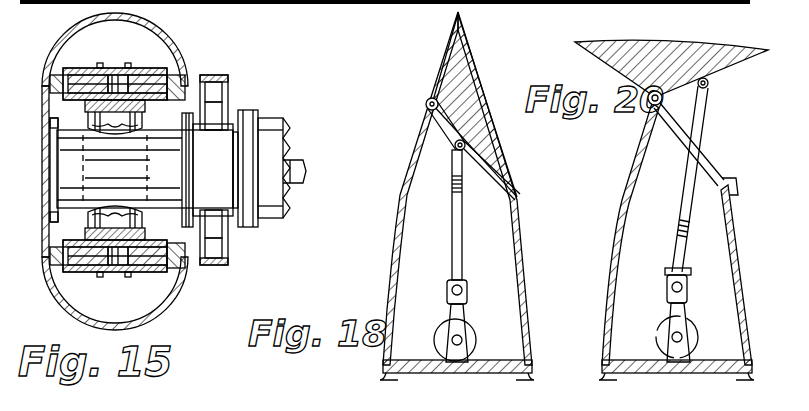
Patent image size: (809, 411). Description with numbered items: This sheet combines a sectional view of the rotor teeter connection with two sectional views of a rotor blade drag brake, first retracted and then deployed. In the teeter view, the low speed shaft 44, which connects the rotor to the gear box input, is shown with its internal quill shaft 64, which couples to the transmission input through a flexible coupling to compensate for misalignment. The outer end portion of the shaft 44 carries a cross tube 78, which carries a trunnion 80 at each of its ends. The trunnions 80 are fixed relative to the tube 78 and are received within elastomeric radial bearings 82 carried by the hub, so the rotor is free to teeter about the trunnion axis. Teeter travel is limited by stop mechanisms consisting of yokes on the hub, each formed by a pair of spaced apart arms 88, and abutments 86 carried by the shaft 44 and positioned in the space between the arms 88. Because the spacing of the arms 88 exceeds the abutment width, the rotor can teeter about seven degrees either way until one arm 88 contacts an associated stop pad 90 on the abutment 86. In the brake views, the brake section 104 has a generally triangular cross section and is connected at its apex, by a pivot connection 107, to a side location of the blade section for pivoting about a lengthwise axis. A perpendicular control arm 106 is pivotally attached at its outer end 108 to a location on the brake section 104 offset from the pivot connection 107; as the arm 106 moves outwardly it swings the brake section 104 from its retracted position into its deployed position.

In FIG. 15, the low speed shaft 44 is at (272, 130).
In FIG. 15, the internal quill shaft 64 is at (292, 162).
In FIG. 15, the cross tube 78 is at (85, 106).
In FIG. 15, the trunnion 80 is at (160, 82).
In FIG. 15, the elastomeric radial bearing 82 is at (64, 88).
In FIG. 15, the abutment 86 is at (216, 116).
In FIG. 15, the arm 88 is at (205, 74).
In FIG. 15, the stop pad 90 is at (215, 92).
In FIG. 18, the brake section 104 is at (482, 70).
In FIG. 20, the brake section 104 is at (592, 56).
In FIG. 18, the control arm 106 is at (452, 238).
In FIG. 20, the control arm 106 is at (682, 220).
In FIG. 18, the pivot connection 107 is at (426, 104).
In FIG. 20, the pivot connection 107 is at (652, 112).
In FIG. 18, the outer end of control arm 108 is at (455, 146).
In FIG. 20, the outer end of control arm 108 is at (710, 88).